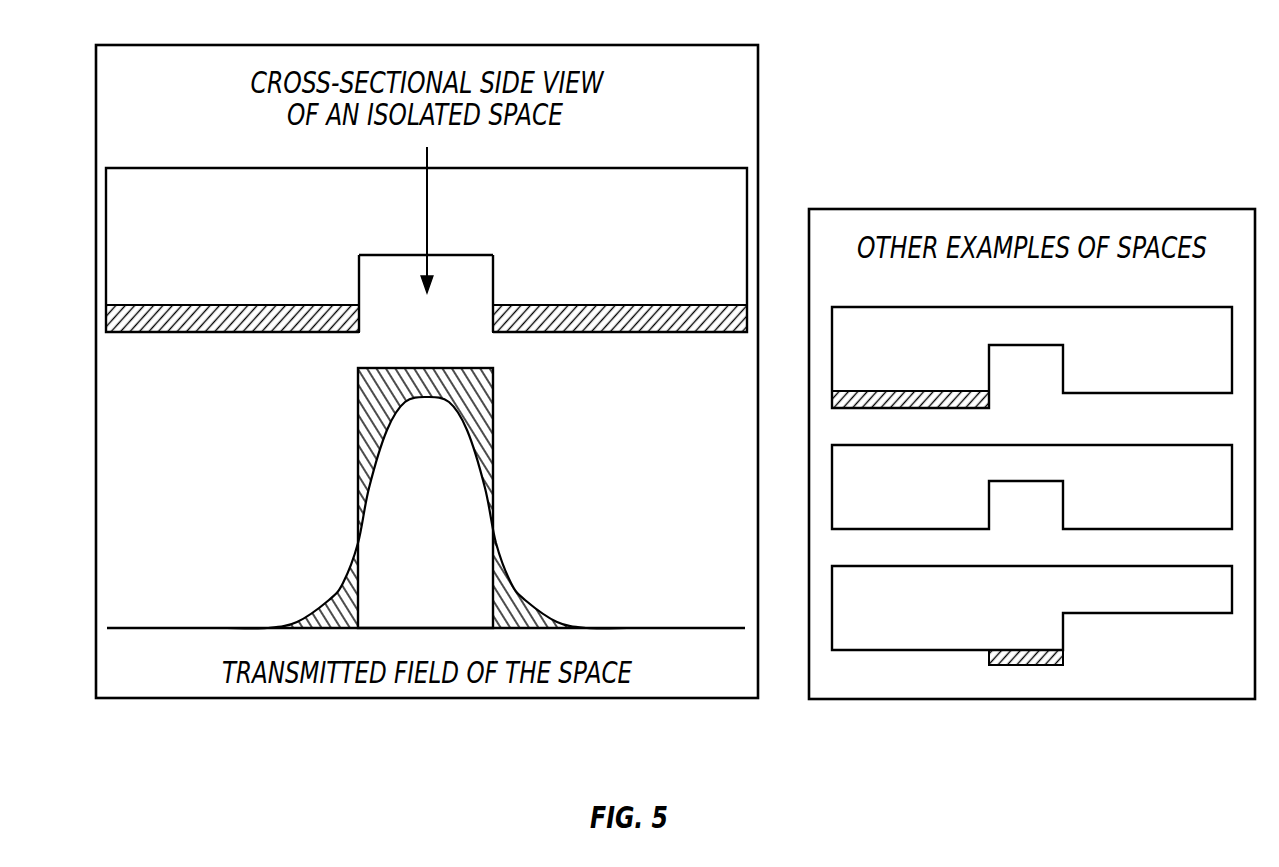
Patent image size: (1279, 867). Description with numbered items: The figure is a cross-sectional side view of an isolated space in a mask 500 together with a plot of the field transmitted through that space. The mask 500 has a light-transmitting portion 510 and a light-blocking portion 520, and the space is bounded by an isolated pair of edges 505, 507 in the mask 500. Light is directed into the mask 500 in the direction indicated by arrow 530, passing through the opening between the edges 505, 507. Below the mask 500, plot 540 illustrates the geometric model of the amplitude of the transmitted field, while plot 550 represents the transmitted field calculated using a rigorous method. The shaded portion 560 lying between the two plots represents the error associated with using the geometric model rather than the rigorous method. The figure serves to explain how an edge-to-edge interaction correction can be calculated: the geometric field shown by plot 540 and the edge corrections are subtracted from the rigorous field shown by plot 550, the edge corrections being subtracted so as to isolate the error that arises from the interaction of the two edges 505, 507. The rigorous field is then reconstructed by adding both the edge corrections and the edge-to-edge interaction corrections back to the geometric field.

The mask 500 is at (727, 165).
The edge 505 is at (358, 336).
The edge 507 is at (494, 336).
The light-transmitting portion 510 is at (106, 233).
The light-blocking portion 520 is at (106, 317).
The arrow 530 is at (428, 263).
The plot 540 is at (493, 424).
The plot 550 is at (524, 598).
The shaded portion 560 is at (481, 465).